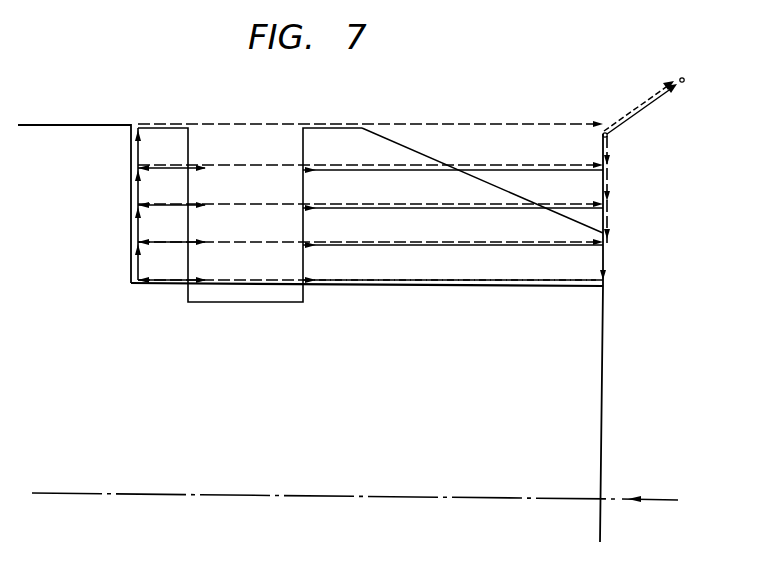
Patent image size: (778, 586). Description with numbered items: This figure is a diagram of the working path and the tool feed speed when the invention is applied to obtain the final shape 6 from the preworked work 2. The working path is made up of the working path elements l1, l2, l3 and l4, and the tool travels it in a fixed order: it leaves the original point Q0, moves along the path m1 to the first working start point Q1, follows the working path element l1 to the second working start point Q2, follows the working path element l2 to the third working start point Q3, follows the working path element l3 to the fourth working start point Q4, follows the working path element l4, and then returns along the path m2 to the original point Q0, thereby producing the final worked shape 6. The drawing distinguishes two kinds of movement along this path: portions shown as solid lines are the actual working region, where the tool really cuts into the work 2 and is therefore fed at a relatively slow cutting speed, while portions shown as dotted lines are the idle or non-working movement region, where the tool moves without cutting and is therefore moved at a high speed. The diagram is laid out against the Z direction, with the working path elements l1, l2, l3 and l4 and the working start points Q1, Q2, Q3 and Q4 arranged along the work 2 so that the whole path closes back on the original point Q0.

The preworked work 2 is at (48, 138).
The final shape 6 is at (402, 287).
The working path element l1 is at (351, 172).
The working path element l2 is at (351, 210).
The working path element l3 is at (355, 247).
The working path element l4 is at (365, 283).
The original point Q0 is at (697, 86).
The first working start point Q1 is at (611, 137).
The second working start point Q2 is at (610, 172).
The third working start point Q3 is at (609, 210).
The fourth working start point Q4 is at (609, 248).
The path m1 is at (659, 99).
The path m2 is at (645, 103).
The Z axis Z is at (355, 488).